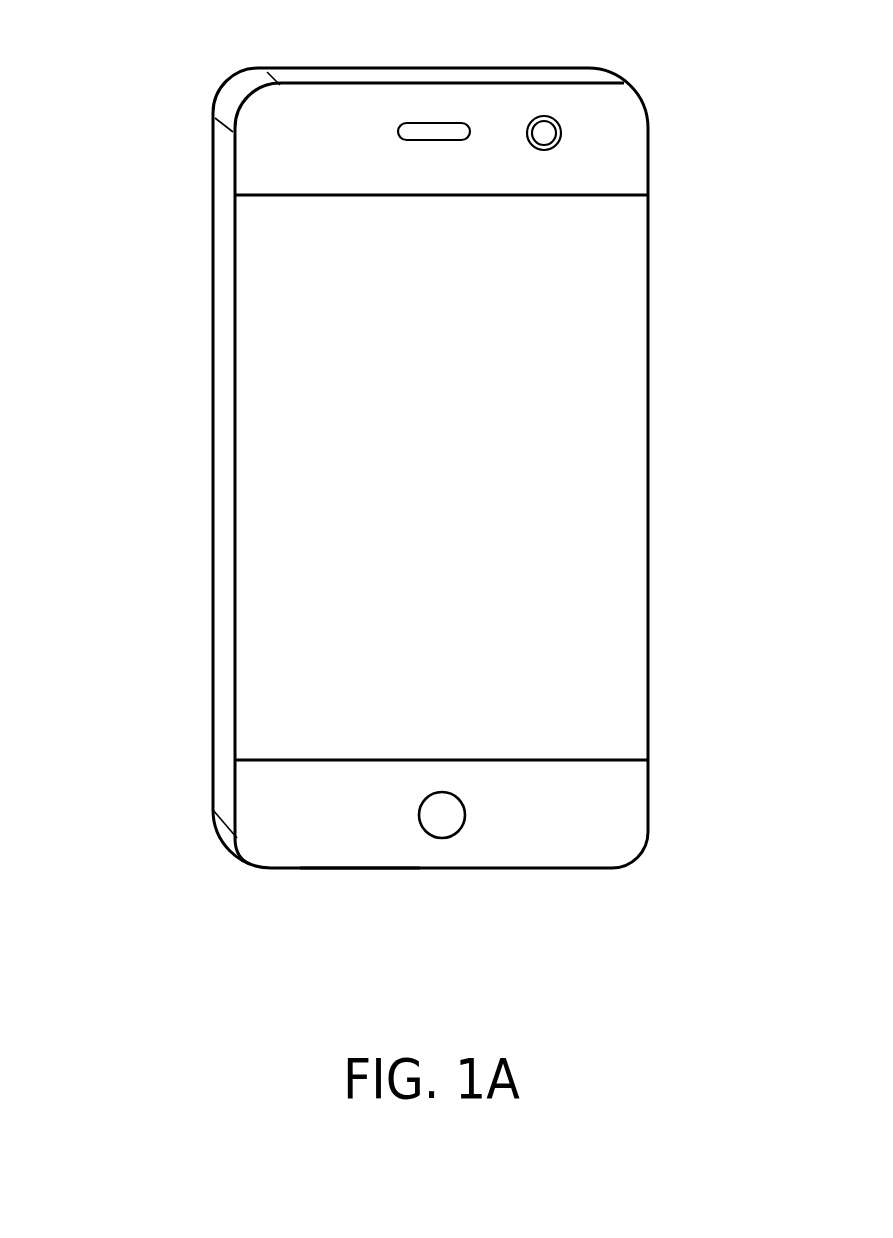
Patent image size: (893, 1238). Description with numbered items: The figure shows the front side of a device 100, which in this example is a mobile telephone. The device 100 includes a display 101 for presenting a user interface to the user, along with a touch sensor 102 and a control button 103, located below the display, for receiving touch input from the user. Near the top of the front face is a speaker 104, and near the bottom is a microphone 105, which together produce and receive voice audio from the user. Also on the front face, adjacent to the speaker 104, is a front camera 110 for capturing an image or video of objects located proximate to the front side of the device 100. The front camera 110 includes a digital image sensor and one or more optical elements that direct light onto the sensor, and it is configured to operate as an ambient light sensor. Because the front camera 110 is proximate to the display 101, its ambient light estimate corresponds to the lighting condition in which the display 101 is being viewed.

The device 100 is at (128, 44).
The display 101 is at (245, 430).
The touch sensor 102 is at (314, 360).
The control button 103 is at (462, 832).
The speaker 104 is at (460, 118).
The microphone 105 is at (355, 868).
The front camera 110 is at (565, 133).